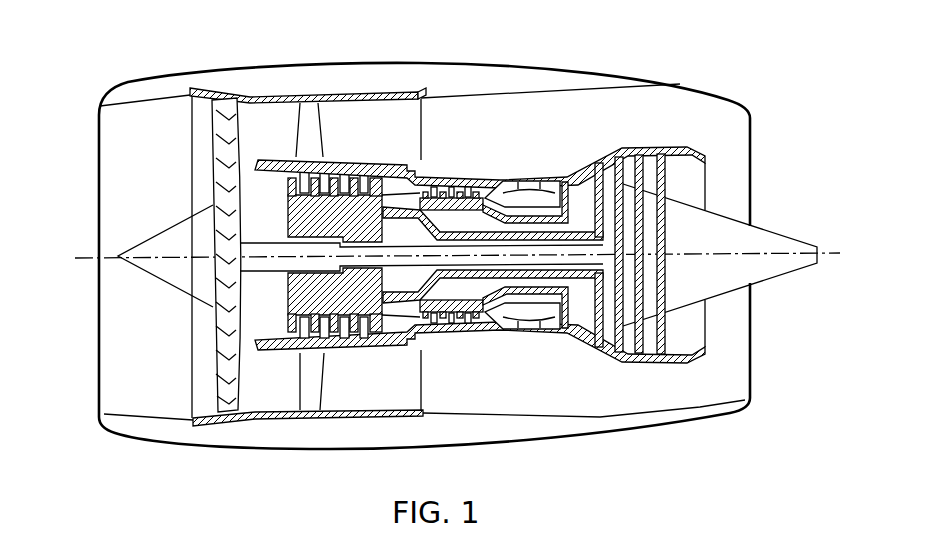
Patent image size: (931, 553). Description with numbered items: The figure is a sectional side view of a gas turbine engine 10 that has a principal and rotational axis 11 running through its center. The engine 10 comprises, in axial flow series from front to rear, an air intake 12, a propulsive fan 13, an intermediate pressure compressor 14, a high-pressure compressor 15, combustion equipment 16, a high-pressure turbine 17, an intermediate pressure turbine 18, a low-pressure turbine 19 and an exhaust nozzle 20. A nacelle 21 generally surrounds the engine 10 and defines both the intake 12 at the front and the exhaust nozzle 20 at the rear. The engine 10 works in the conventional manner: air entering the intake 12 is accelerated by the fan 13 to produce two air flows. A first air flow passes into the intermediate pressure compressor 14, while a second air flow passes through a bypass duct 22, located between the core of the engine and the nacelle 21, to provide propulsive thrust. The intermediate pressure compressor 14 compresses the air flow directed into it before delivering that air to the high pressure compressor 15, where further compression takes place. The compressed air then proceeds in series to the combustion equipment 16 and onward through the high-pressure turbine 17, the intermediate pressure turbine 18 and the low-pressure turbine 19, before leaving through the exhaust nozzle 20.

The gas turbine engine 10 is at (86, 151).
The principal and rotational axis 11 is at (100, 256).
The air intake 12 is at (160, 97).
The propulsive fan 13 is at (217, 373).
The intermediate pressure compressor 14 is at (346, 355).
The high-pressure compressor 15 is at (450, 188).
The combustion equipment 16 is at (512, 318).
The high-pressure turbine 17 is at (563, 330).
The intermediate pressure turbine 18 is at (600, 168).
The low-pressure turbine 19 is at (620, 355).
The exhaust nozzle 20 is at (751, 400).
The nacelle 21 is at (573, 68).
The bypass duct 22 is at (391, 135).